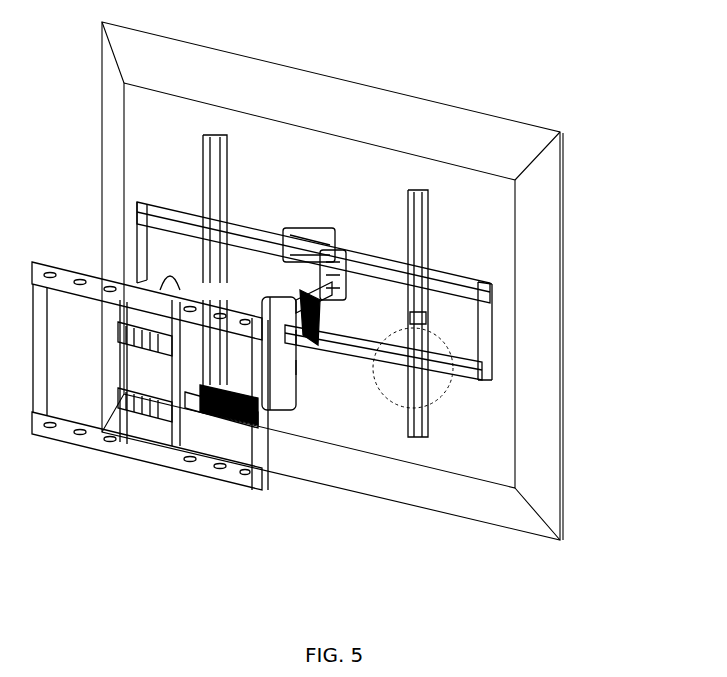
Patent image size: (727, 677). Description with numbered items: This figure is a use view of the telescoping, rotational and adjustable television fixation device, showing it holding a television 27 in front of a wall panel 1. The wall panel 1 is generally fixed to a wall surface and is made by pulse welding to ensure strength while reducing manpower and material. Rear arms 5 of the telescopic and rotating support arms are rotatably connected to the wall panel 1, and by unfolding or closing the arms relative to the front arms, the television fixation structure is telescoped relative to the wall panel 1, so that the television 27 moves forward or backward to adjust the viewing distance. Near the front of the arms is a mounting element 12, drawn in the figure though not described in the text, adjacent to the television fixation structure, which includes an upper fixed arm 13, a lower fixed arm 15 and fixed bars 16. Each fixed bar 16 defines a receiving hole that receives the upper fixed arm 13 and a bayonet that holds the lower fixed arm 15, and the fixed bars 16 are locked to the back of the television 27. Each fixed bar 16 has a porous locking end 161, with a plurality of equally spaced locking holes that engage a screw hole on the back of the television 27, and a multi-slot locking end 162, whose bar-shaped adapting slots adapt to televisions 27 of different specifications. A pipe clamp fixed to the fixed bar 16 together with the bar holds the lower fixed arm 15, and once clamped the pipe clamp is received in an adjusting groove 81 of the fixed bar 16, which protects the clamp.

The wall panel 1 is at (146, 449).
The rear arm 5 is at (280, 407).
The mounting bracket 12 is at (330, 227).
The upper fixed arm 13 is at (240, 222).
The lower fixed arm 15 is at (468, 373).
The fixed bar 16 is at (207, 213).
The porous locking end 161 is at (420, 247).
The multi-slot locking end 162 is at (412, 437).
The television 27 is at (135, 129).
The adjusting groove 81 is at (418, 318).